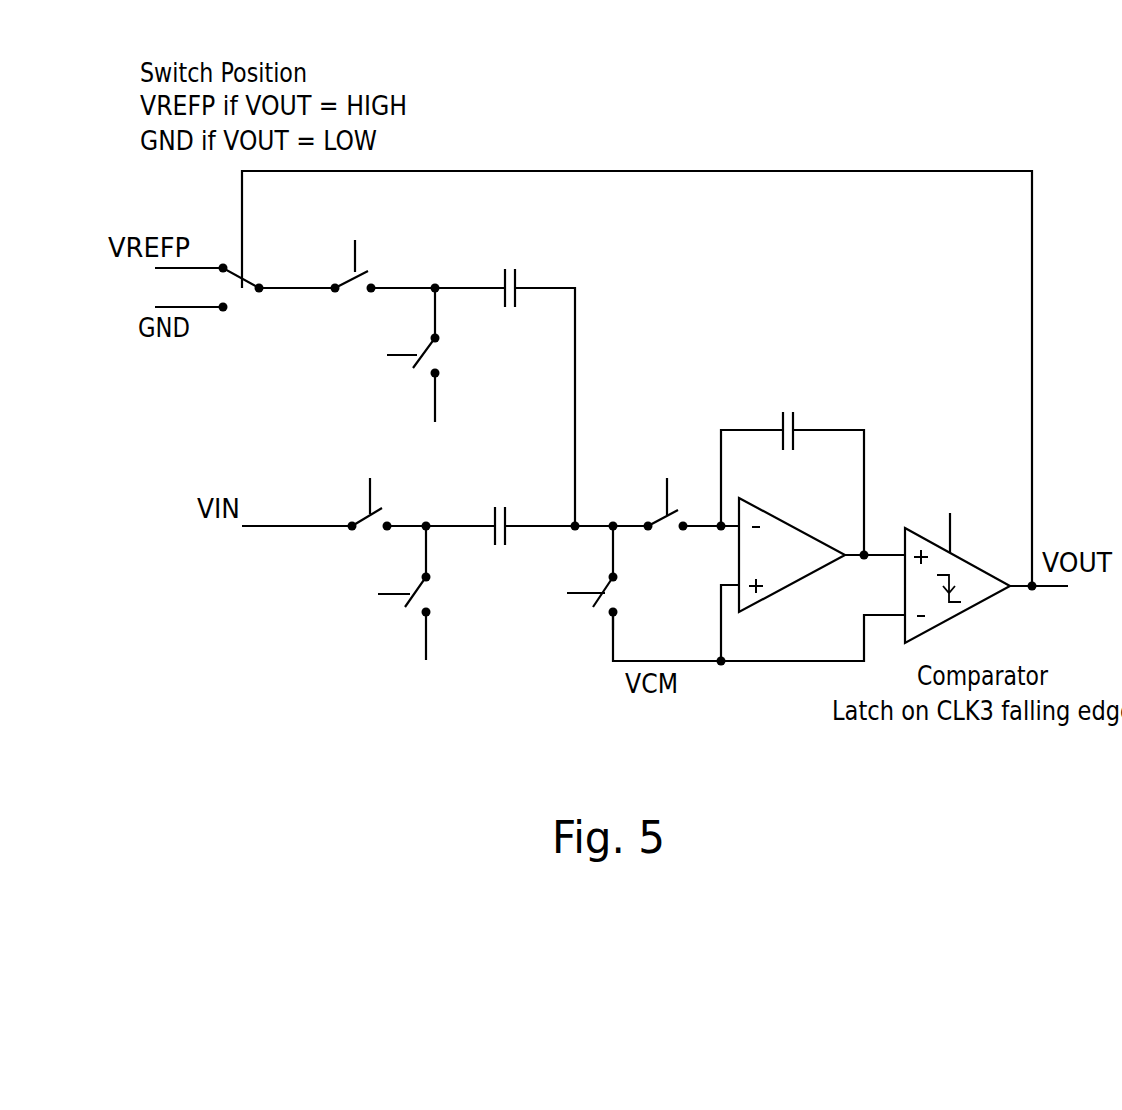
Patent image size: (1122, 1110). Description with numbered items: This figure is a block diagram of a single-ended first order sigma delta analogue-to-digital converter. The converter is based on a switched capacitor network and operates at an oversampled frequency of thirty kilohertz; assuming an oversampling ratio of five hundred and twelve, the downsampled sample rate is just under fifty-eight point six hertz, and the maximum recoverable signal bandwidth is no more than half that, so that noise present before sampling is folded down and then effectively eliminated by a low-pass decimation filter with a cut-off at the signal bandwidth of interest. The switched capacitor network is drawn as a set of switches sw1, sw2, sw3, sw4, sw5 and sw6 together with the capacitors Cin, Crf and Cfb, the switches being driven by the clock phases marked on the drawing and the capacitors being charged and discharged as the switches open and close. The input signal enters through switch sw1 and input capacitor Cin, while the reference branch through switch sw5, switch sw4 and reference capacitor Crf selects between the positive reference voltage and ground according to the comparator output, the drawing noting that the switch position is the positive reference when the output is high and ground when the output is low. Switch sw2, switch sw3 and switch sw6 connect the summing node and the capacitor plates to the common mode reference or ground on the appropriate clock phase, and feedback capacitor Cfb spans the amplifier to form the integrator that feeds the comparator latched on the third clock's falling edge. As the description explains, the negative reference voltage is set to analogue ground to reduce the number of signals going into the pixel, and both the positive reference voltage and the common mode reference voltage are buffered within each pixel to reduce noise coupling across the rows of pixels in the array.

The switch sw1 (CLK1) sw1 is at (369, 505).
The switch sw2 (CLK2) sw2 is at (667, 505).
The switch sw3 (CLK1) sw3 is at (577, 578).
The switch sw4 (CLK1) sw4 is at (412, 360).
The switch sw5 (CLK2) sw5 is at (355, 267).
The switch sw6 (CLK2) sw6 is at (401, 597).
The input capacitor Cin is at (498, 510).
The reference capacitor Crf is at (509, 303).
The feedback capacitor Cfb is at (792, 466).